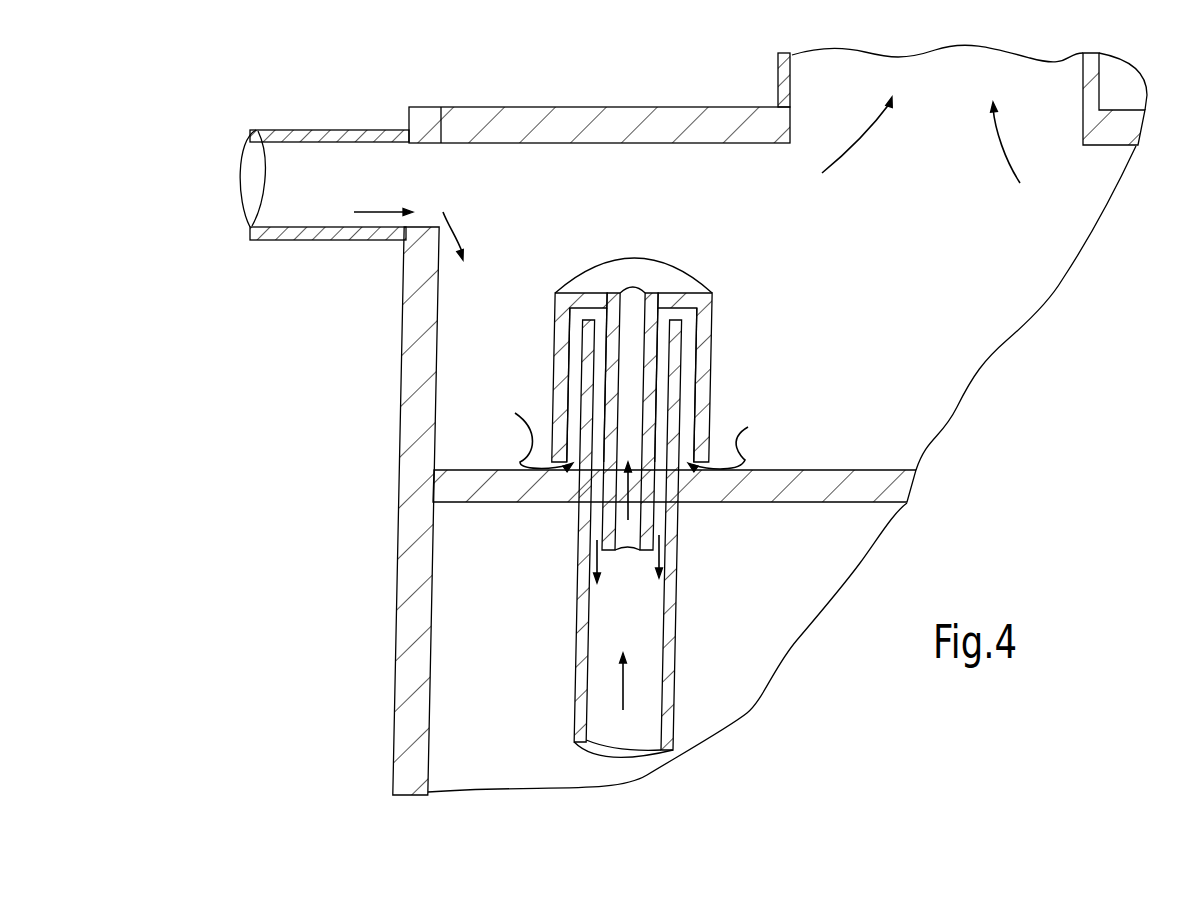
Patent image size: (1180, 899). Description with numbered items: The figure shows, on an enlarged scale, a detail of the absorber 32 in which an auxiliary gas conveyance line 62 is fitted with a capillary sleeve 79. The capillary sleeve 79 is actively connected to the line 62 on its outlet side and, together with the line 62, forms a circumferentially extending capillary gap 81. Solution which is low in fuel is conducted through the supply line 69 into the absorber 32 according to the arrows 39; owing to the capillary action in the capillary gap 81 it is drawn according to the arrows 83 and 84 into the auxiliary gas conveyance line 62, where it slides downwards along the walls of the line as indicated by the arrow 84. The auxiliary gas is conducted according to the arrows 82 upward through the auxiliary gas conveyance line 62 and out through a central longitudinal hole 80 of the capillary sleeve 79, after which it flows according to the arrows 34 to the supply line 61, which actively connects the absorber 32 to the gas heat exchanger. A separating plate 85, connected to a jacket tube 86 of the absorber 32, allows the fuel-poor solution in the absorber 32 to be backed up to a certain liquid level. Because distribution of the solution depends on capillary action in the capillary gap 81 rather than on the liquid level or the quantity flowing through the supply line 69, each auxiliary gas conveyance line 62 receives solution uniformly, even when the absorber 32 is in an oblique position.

The absorber 32 is at (324, 503).
The arrows 34 is at (868, 145).
The arrows 39 is at (388, 210).
The supply line 61 is at (845, 75).
The auxiliary gas conveyance line 62 is at (675, 575).
The supply line 69 is at (333, 200).
The capillary sleeve 79 is at (690, 283).
The central longitudinal hole 80 is at (634, 300).
The capillary gap 81 is at (685, 442).
The arrows 82 is at (625, 503).
The arrows 83 is at (640, 430).
The arrows 84 is at (662, 543).
The separating plate 85 is at (855, 473).
The jacket tube 86 is at (404, 614).